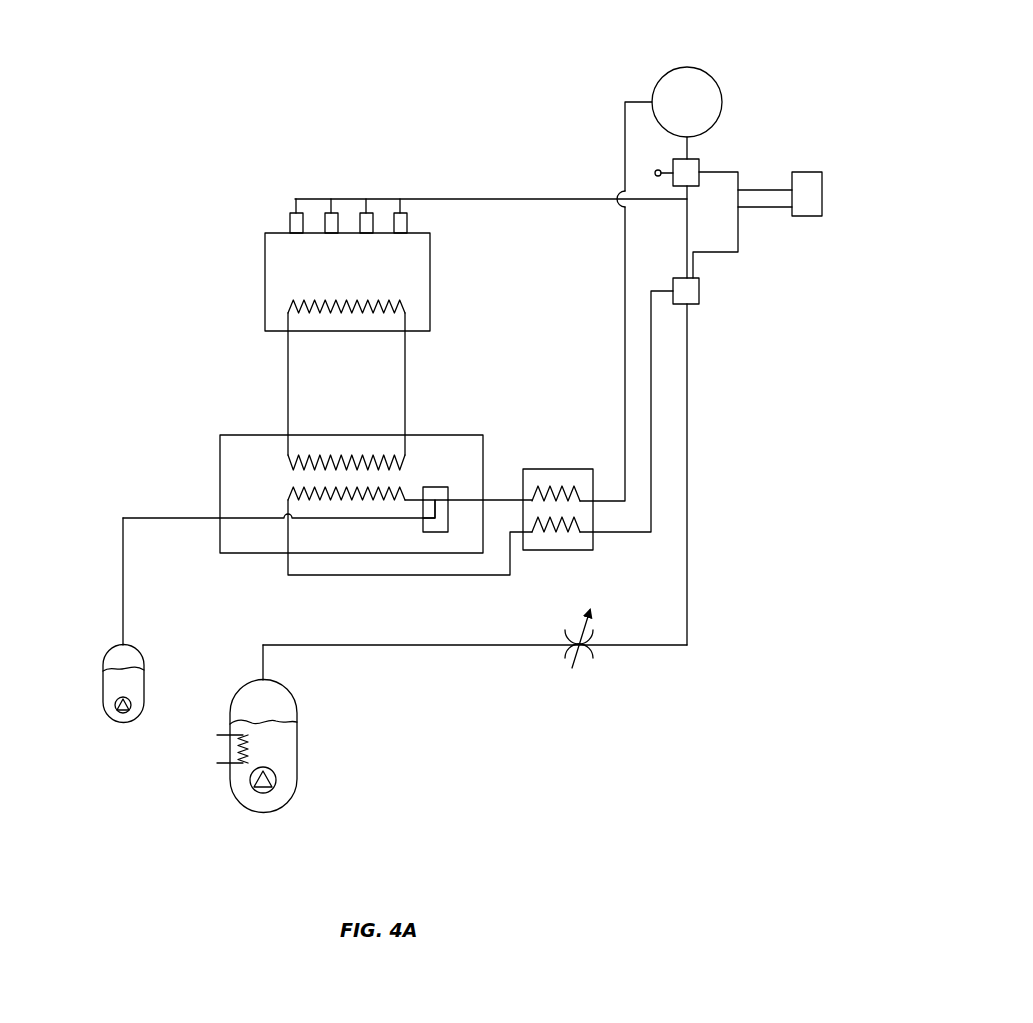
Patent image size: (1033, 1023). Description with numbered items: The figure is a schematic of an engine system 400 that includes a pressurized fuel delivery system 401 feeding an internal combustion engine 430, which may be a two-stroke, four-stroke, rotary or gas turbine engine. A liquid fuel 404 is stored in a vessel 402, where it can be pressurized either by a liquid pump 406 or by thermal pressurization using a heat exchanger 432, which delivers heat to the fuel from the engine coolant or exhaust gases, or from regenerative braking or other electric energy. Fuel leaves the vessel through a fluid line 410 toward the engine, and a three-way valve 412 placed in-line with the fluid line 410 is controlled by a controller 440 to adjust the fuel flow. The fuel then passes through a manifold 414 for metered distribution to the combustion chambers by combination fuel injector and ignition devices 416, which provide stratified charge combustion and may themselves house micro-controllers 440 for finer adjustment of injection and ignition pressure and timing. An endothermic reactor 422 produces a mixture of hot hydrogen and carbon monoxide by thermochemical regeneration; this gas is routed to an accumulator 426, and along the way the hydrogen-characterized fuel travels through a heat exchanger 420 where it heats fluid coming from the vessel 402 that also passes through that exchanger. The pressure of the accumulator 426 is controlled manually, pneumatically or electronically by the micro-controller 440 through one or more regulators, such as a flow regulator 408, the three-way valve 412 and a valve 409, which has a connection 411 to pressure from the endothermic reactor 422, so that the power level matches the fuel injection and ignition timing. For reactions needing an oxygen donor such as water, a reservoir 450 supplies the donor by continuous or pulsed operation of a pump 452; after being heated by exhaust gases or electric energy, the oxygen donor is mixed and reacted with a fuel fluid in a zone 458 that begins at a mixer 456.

The engine system 400 is at (205, 88).
The pressurized fuel delivery system 401 is at (600, 128).
The vessel 402 is at (297, 777).
The liquid fuel 404 is at (285, 738).
The liquid pump 406 is at (263, 793).
The flow regulator 408 is at (583, 652).
The valve 409 is at (699, 162).
The fluid line 410 is at (435, 648).
The connection 411 is at (655, 173).
The three-way valve 412 is at (699, 290).
The manifold 414 is at (348, 199).
The fuel injector and ignition devices 416 is at (327, 230).
The heat exchanger 420 is at (582, 469).
The endothermic reactor 422 is at (220, 480).
The accumulator 426 is at (710, 75).
The internal combustion engine 430 is at (265, 283).
The heat exchanger 432 is at (232, 752).
The controller 440 is at (805, 172).
The reservoir 450 is at (103, 690).
The pump 452 is at (115, 713).
The mixer 456 is at (437, 487).
The zone 458 is at (440, 455).